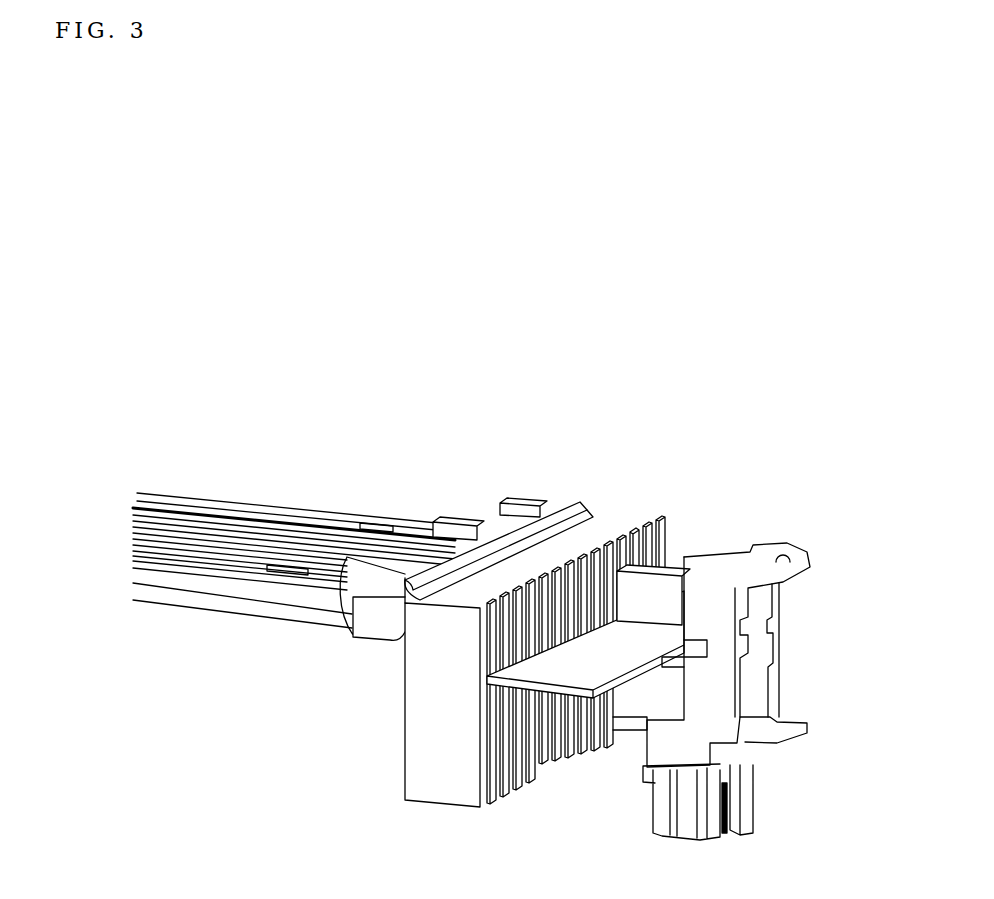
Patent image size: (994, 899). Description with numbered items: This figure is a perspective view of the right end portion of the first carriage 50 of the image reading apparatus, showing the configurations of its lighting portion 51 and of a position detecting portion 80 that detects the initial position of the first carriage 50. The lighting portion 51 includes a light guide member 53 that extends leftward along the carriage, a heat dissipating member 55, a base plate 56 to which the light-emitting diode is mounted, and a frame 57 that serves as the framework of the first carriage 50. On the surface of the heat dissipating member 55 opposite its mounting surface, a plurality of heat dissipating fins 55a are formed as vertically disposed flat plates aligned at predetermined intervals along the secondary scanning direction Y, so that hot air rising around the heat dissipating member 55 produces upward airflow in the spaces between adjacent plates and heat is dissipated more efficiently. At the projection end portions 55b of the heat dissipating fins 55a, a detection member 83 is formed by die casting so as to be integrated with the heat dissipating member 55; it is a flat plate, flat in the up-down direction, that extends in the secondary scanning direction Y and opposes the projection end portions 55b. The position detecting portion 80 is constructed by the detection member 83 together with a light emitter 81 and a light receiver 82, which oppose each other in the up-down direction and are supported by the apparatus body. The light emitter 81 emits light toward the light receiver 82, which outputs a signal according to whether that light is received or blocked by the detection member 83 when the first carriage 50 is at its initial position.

The first carriage 50 is at (260, 369).
The lighting portion 51 is at (293, 503).
The light guide member 53 is at (190, 557).
The heat dissipating member 55 is at (549, 648).
The heat dissipating fins 55a is at (437, 792).
The projection end portions 55b is at (483, 792).
The base plate 56 is at (592, 503).
The frame 57 is at (462, 537).
The position detecting portion 80 is at (827, 557).
The light emitter 81 is at (670, 583).
The light receiver 82 is at (637, 710).
The detection member 83 is at (552, 670).